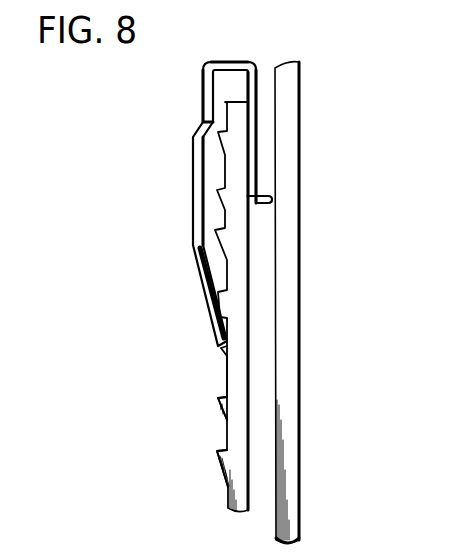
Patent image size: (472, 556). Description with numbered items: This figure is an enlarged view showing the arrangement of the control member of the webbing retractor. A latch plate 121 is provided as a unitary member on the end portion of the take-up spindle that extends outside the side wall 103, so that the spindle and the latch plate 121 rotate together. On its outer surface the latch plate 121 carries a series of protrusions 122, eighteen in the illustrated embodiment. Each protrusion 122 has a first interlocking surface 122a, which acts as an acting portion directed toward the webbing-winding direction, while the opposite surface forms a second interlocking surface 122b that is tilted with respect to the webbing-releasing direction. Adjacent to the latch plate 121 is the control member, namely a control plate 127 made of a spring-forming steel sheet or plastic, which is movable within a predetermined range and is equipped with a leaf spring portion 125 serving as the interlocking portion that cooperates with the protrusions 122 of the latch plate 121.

The side wall 103 is at (291, 93).
The control plate 127 is at (199, 177).
The leaf spring portion 125 is at (200, 272).
The latch plate 121 is at (235, 117).
The protrusions 122 is at (223, 357).
The first interlocking surface 122a is at (222, 452).
The second interlocking surface 122b is at (220, 465).